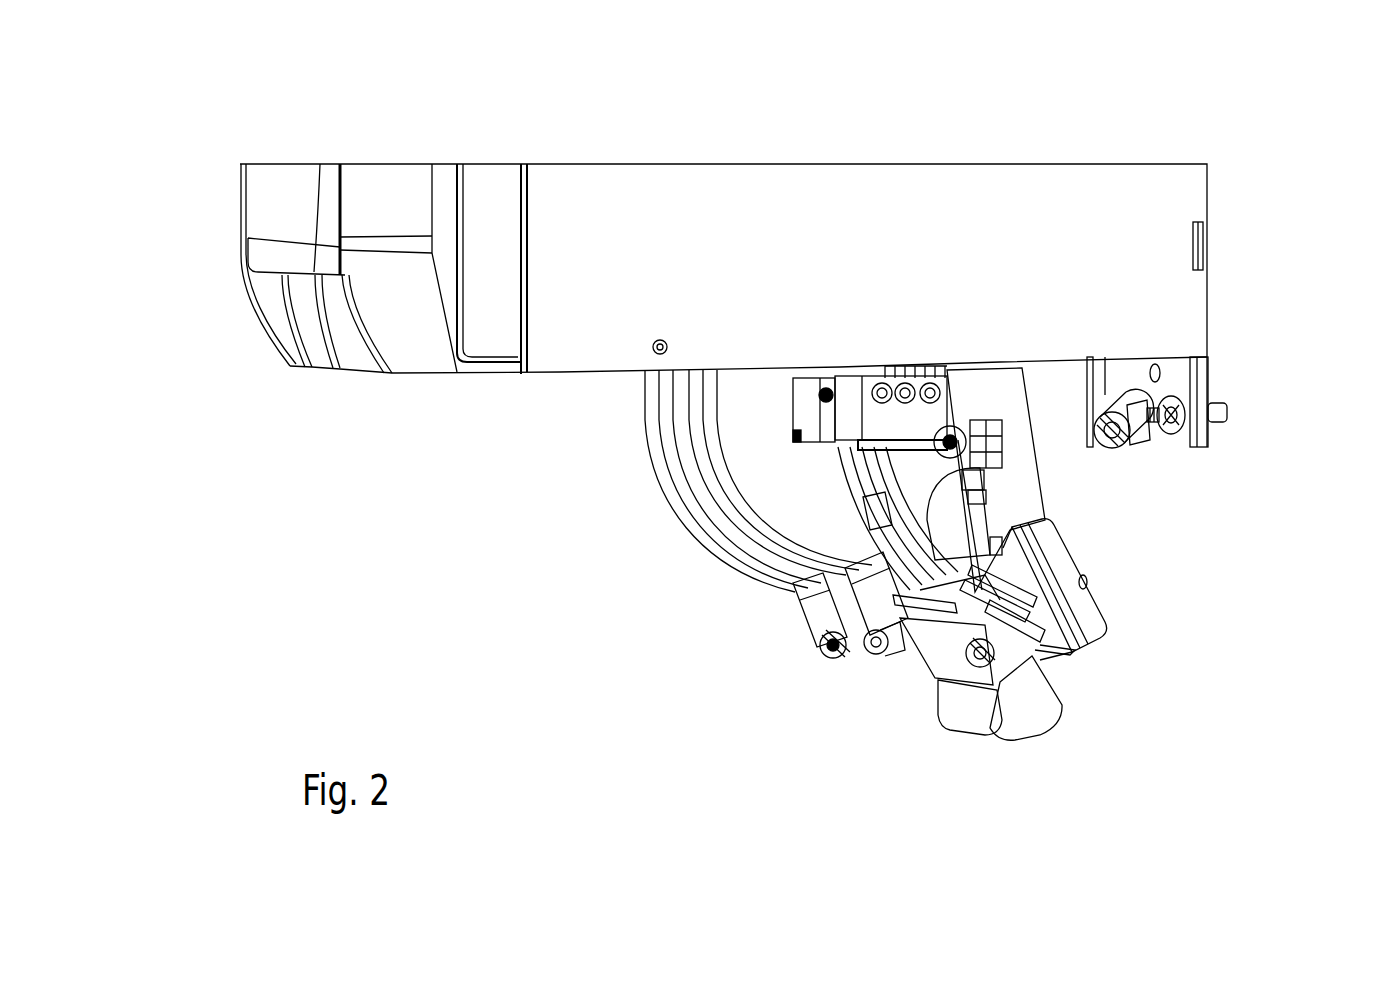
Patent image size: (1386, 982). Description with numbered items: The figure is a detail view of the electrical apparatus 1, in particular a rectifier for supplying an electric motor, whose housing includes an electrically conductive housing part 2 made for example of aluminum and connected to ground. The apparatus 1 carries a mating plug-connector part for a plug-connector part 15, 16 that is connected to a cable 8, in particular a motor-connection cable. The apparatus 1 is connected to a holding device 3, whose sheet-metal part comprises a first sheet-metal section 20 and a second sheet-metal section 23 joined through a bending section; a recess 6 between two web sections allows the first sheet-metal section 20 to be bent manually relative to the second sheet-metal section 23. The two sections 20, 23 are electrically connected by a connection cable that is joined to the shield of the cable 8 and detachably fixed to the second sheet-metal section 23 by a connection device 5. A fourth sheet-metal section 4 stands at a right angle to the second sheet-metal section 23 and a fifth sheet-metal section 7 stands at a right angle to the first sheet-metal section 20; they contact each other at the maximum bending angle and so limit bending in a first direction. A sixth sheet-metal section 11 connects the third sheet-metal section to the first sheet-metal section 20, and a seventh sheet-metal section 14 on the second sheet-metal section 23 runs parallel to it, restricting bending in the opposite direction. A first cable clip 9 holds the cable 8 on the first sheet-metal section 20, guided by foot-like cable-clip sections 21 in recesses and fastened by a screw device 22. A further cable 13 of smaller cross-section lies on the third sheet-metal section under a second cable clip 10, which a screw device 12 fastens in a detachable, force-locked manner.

The electrical apparatus 1 is at (1092, 130).
The housing part 2 is at (1160, 222).
The holding device 3 is at (1103, 579).
The fourth sheet-metal section 4 is at (1033, 408).
The connection device 5 is at (1005, 443).
The recess 6 is at (977, 498).
The fifth sheet-metal section 7 is at (1100, 613).
The cable 8 is at (1027, 700).
The first cable clip 9 is at (945, 643).
The second cable clip 10 is at (876, 641).
The sixth sheet-metal section 11 is at (885, 580).
The screw device 12 is at (833, 645).
The further cable 13 is at (815, 598).
The seventh sheet-metal section 14 is at (858, 518).
The plug-connector part 15 is at (850, 411).
The plug-connector part 16 is at (810, 393).
The first sheet-metal section 20 is at (1002, 553).
The cable-clip section 21 is at (1042, 657).
The screw device 22 is at (977, 664).
The second sheet-metal section 23 is at (890, 456).